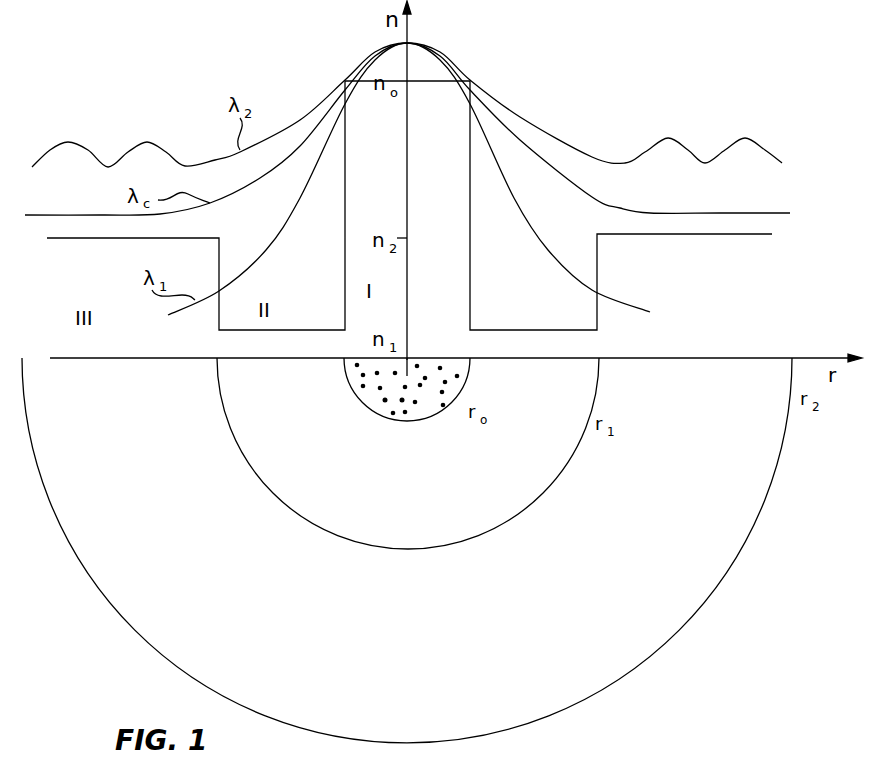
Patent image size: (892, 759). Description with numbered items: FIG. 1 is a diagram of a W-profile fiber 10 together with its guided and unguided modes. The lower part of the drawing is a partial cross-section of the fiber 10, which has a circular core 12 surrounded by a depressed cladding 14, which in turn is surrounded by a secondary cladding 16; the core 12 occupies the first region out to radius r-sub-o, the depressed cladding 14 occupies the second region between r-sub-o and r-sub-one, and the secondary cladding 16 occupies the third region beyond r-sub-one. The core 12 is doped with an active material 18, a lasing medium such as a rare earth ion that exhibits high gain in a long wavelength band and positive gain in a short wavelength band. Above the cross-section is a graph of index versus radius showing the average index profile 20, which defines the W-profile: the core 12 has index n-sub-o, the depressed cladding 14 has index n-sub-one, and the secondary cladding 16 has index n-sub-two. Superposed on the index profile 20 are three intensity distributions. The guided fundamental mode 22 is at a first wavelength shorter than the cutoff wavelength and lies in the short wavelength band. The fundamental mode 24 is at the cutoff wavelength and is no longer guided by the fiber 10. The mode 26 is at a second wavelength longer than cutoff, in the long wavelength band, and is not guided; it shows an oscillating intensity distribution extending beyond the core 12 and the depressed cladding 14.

The W-profile fiber 10 is at (94, 636).
The core 12 is at (366, 406).
The depressed cladding 14 is at (472, 540).
The secondary cladding 16 is at (648, 660).
The active material 18 is at (426, 405).
The average index profile 20 is at (328, 204).
The guided fundamental mode 22 is at (537, 232).
The fundamental mode at cutoff 24 is at (608, 200).
The unguided mode 26 is at (647, 150).